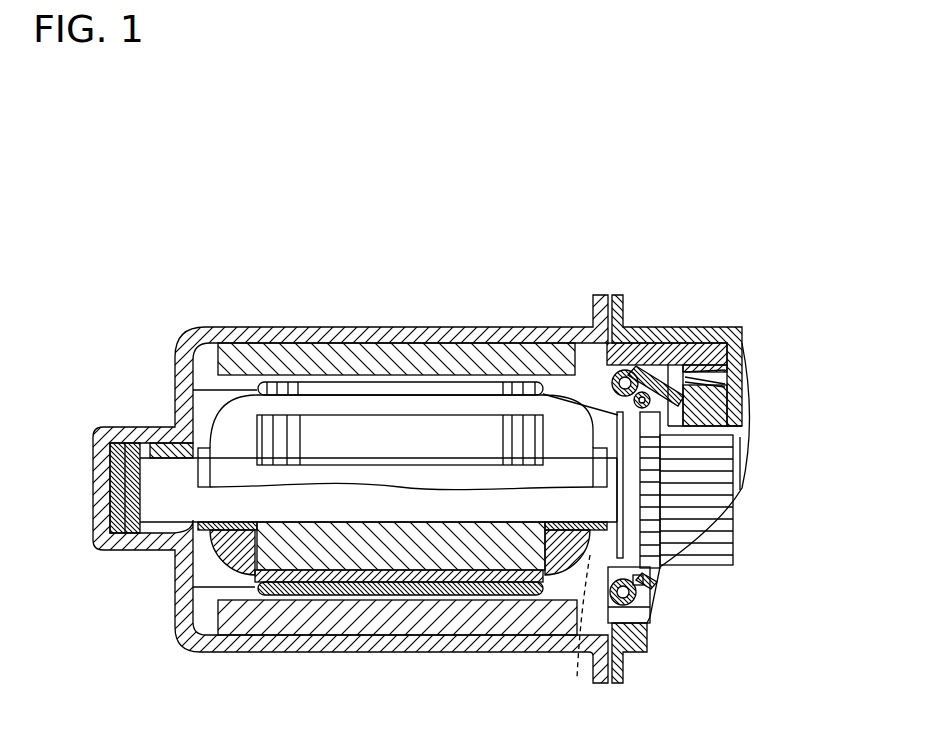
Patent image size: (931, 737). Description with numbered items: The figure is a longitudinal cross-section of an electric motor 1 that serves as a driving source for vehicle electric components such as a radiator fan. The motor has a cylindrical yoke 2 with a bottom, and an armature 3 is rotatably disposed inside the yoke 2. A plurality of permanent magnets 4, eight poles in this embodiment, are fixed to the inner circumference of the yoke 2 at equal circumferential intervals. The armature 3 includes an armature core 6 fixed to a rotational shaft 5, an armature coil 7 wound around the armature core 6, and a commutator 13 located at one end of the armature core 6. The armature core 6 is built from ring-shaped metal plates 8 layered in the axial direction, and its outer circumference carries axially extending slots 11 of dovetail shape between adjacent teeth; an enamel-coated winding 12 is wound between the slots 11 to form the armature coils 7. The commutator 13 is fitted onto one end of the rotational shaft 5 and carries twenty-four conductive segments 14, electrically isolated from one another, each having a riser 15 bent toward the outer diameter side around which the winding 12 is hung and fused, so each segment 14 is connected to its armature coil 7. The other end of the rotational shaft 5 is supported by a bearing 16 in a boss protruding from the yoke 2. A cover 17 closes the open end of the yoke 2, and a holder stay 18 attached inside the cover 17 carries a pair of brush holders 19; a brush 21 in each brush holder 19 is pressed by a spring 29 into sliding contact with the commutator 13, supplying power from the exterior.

The electric motor 1 is at (465, 308).
The yoke 2 is at (348, 327).
The armature 3 is at (320, 428).
The permanent magnets 4 is at (402, 362).
The rotational shaft 5 is at (188, 503).
The armature core 6 is at (316, 458).
The armature coil 7 is at (600, 640).
The metal plates 8 is at (262, 432).
The slots 11 is at (474, 478).
The winding 12 is at (596, 425).
The commutator 13 is at (733, 440).
The segments 14 is at (728, 498).
The riser 15 is at (662, 497).
The bearing 16 is at (140, 522).
The cover 17 is at (632, 332).
The holder stay 18 is at (684, 355).
The brush holders 19 is at (728, 402).
The brush 21 is at (742, 330).
The spring 29 is at (692, 376).